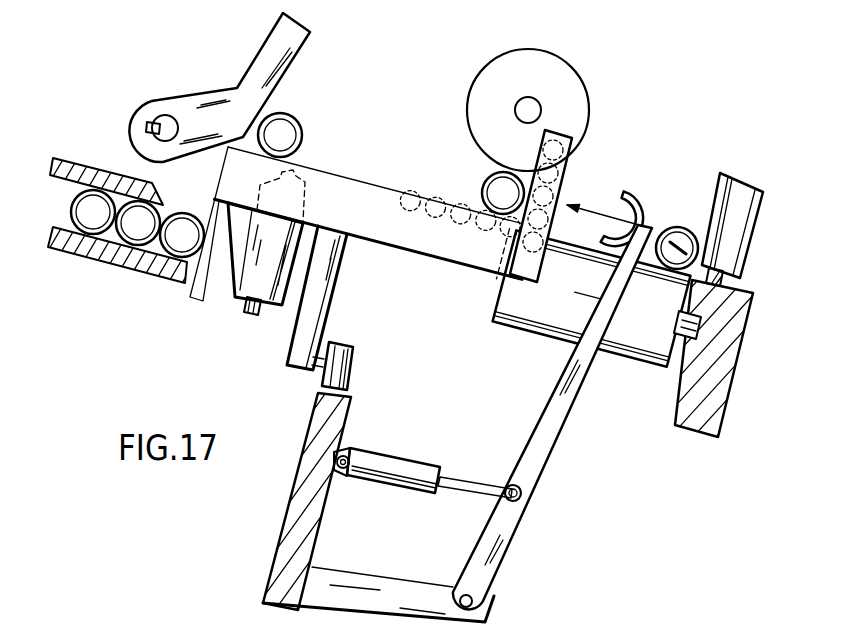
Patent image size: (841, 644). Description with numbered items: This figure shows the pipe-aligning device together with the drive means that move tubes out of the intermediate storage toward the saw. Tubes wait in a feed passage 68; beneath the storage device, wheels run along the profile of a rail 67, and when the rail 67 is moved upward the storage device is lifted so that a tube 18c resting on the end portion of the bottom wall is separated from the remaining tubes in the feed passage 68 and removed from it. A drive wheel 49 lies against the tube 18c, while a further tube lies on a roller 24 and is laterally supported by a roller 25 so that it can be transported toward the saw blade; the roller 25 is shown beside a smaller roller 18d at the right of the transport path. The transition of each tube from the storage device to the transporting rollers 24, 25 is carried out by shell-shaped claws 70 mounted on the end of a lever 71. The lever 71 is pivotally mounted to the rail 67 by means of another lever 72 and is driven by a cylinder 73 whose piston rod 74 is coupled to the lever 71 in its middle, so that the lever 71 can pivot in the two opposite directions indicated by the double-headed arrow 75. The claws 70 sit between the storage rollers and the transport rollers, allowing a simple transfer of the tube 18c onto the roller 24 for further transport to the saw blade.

The tube 18c is at (301, 126).
The roller 18d is at (677, 228).
The roller 24 is at (641, 346).
The roller 25 is at (745, 240).
The drive wheel 49 is at (571, 88).
The rail 67 is at (300, 511).
The feed passage 68 is at (65, 222).
The shell-shaped claws 70 is at (633, 192).
The lever 71 is at (548, 448).
The lever 72 is at (400, 593).
The cylinder 73 is at (407, 468).
The piston rod 74 is at (468, 480).
The double-headed arrow 75 is at (582, 207).